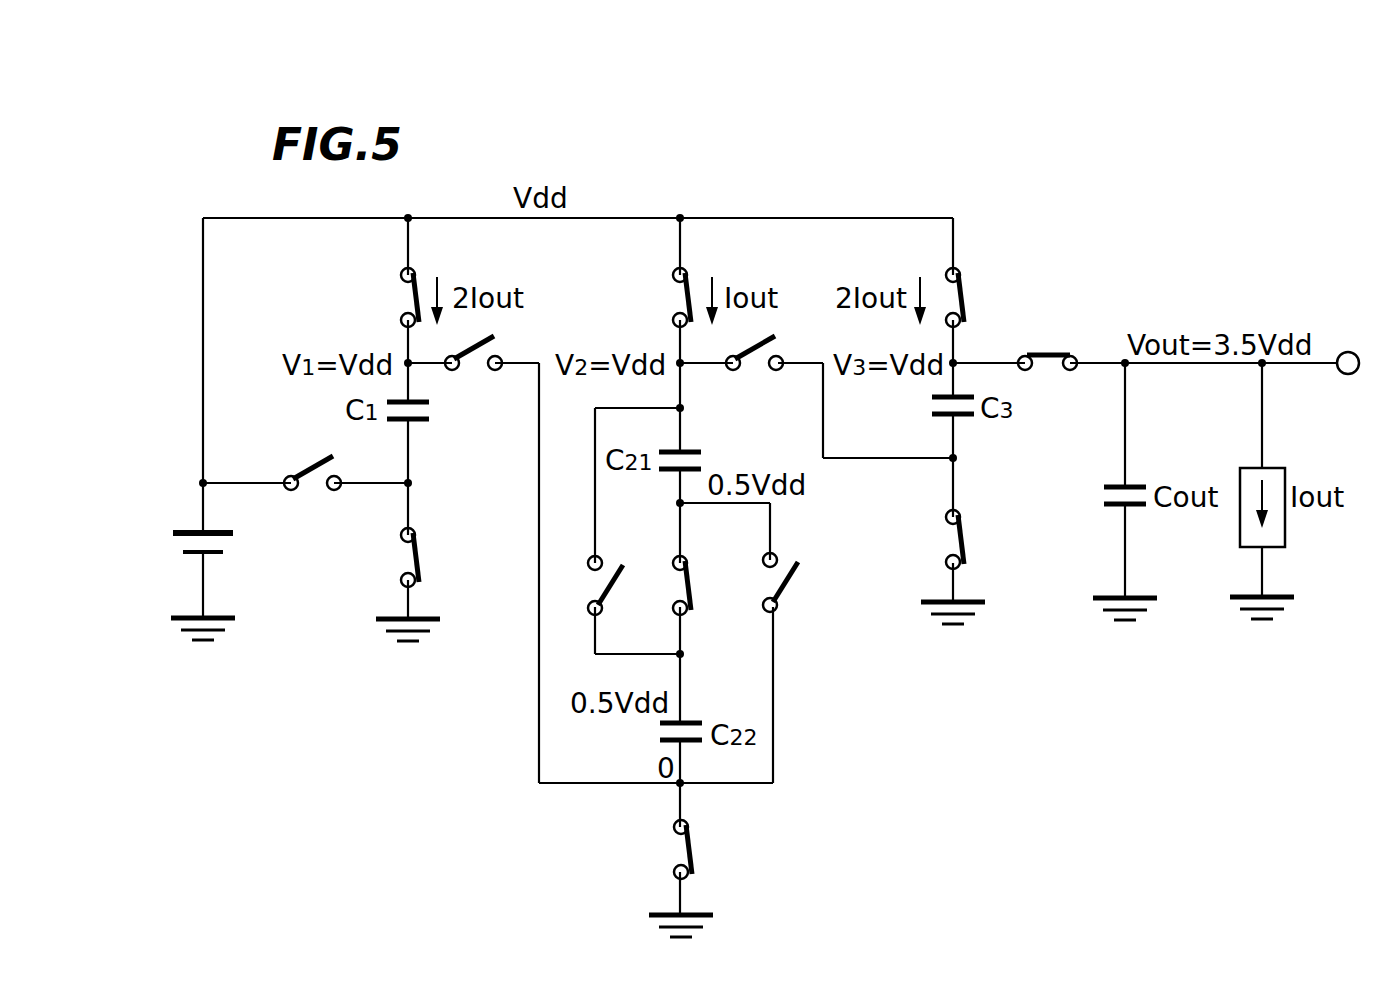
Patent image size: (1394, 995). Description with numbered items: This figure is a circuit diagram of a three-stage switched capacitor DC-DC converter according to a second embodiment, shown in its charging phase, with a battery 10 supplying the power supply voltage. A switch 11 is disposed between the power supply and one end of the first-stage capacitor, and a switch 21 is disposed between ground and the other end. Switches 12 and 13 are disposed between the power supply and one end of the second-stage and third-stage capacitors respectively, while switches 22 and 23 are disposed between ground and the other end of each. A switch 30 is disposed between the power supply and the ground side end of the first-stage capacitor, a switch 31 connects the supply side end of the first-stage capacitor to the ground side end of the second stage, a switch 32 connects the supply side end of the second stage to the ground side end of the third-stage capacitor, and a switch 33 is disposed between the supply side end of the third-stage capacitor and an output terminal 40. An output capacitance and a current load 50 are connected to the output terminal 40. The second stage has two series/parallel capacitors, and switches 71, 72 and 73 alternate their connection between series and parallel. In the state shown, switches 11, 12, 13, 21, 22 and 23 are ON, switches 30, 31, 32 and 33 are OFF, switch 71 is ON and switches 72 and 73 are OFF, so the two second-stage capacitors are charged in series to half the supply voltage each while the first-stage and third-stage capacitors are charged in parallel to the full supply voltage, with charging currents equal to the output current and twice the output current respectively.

The battery 10 is at (237, 548).
The switch 11 is at (395, 292).
The switch 12 is at (668, 292).
The switch 13 is at (970, 290).
The switch 21 is at (432, 562).
The switch 22 is at (703, 853).
The switch 23 is at (975, 540).
The switch 30 is at (312, 500).
The switch 31 is at (473, 380).
The switch 32 is at (757, 375).
The switch 33 is at (1043, 378).
The output terminal 40 is at (1345, 350).
The current load 50 is at (1295, 545).
The switch 71 is at (703, 595).
The switch 72 is at (620, 598).
The switch 73 is at (797, 598).